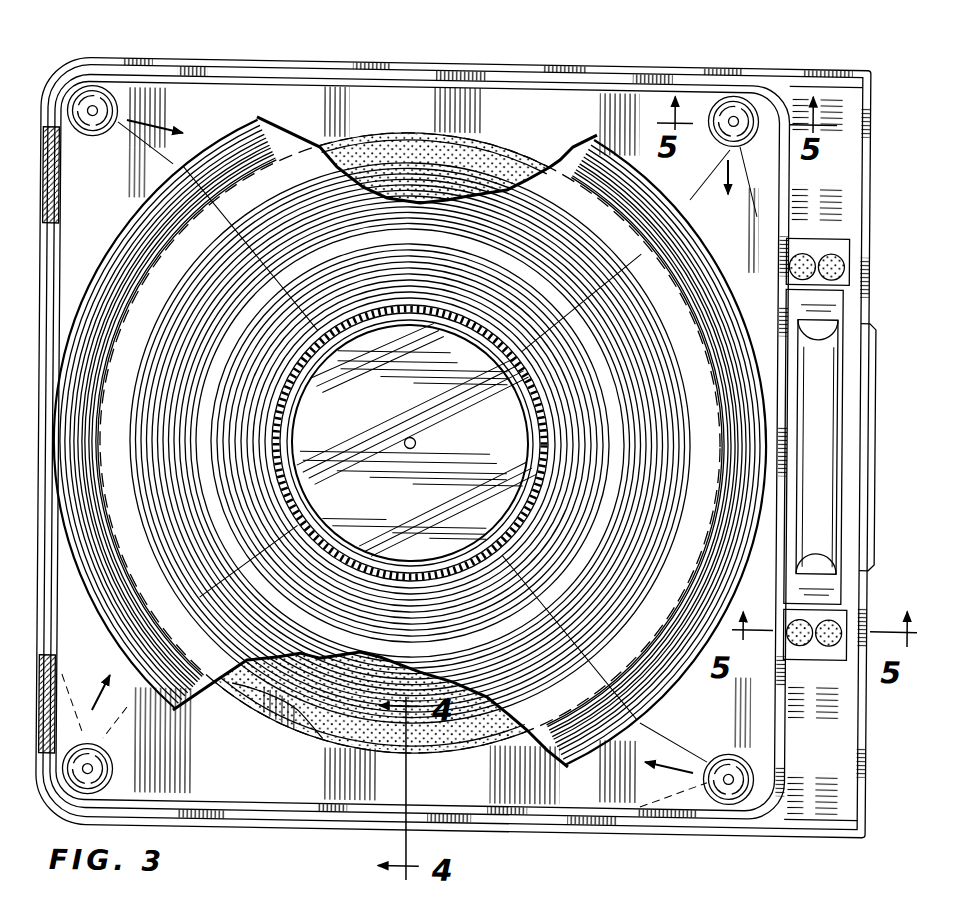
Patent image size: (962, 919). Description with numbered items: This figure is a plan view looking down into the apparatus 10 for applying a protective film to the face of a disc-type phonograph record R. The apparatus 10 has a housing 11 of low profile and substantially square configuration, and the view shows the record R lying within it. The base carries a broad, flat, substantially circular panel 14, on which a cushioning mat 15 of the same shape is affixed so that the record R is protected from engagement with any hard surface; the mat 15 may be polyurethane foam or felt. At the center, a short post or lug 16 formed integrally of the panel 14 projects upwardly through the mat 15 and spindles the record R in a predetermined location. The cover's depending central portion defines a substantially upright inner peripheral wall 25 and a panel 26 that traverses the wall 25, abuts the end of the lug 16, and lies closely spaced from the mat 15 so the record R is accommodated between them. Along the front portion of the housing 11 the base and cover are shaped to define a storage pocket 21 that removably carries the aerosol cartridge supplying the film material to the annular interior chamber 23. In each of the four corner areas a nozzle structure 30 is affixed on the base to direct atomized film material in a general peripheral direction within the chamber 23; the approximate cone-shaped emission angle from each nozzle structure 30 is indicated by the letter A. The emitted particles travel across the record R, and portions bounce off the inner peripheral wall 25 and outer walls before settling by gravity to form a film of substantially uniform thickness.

The apparatus 10 is at (260, 58).
The housing 11 is at (460, 66).
The circular panel 14 is at (279, 704).
The cushioning mat 15 is at (394, 675).
The post or lug 16 is at (418, 442).
The storage pocket 21 is at (821, 541).
The interior chamber 23 is at (605, 99).
The inner peripheral wall 25 is at (519, 527).
The panel 26 is at (491, 364).
The nozzle structure 30 is at (730, 92).
The angle of emission A is at (756, 201).
The record R is at (660, 674).